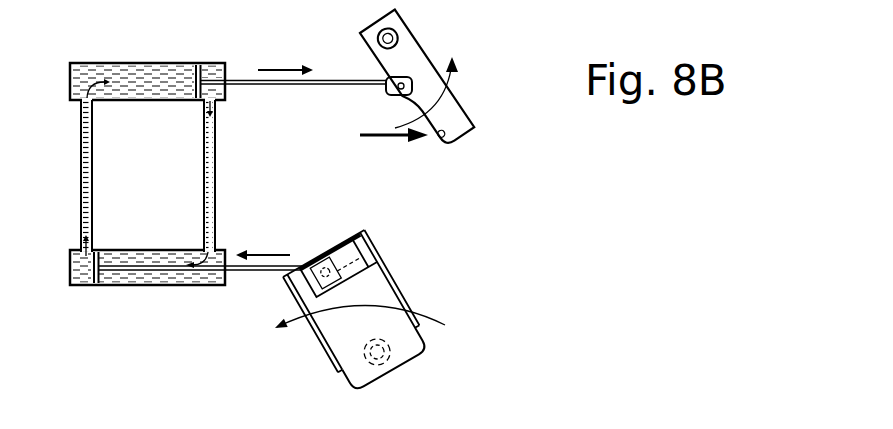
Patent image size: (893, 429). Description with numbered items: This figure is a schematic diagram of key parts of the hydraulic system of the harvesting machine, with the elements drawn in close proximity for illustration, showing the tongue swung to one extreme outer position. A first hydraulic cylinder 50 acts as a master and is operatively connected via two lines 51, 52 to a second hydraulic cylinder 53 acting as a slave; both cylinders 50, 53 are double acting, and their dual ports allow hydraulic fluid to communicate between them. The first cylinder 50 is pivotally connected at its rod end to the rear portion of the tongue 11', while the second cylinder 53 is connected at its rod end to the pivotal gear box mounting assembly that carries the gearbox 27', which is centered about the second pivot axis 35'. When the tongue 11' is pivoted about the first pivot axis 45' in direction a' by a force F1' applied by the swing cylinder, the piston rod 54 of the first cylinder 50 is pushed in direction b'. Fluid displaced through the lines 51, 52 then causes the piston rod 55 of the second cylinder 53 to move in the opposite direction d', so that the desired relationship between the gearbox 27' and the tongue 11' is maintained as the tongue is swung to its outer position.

The first hydraulic cylinder 50 is at (147, 59).
The line 51 is at (92, 157).
The line 52 is at (212, 172).
The second hydraulic cylinder 53 is at (140, 288).
The piston rod 54 is at (318, 84).
The piston rod 55 is at (248, 287).
The tongue 11' is at (460, 81).
The first pivot axis 45' is at (429, 26).
The gearbox 27' is at (401, 312).
The second pivot axis 35' is at (320, 368).
The direction a' is at (454, 92).
The direction b' is at (285, 52).
The direction d' is at (283, 239).
The force F1' is at (375, 155).